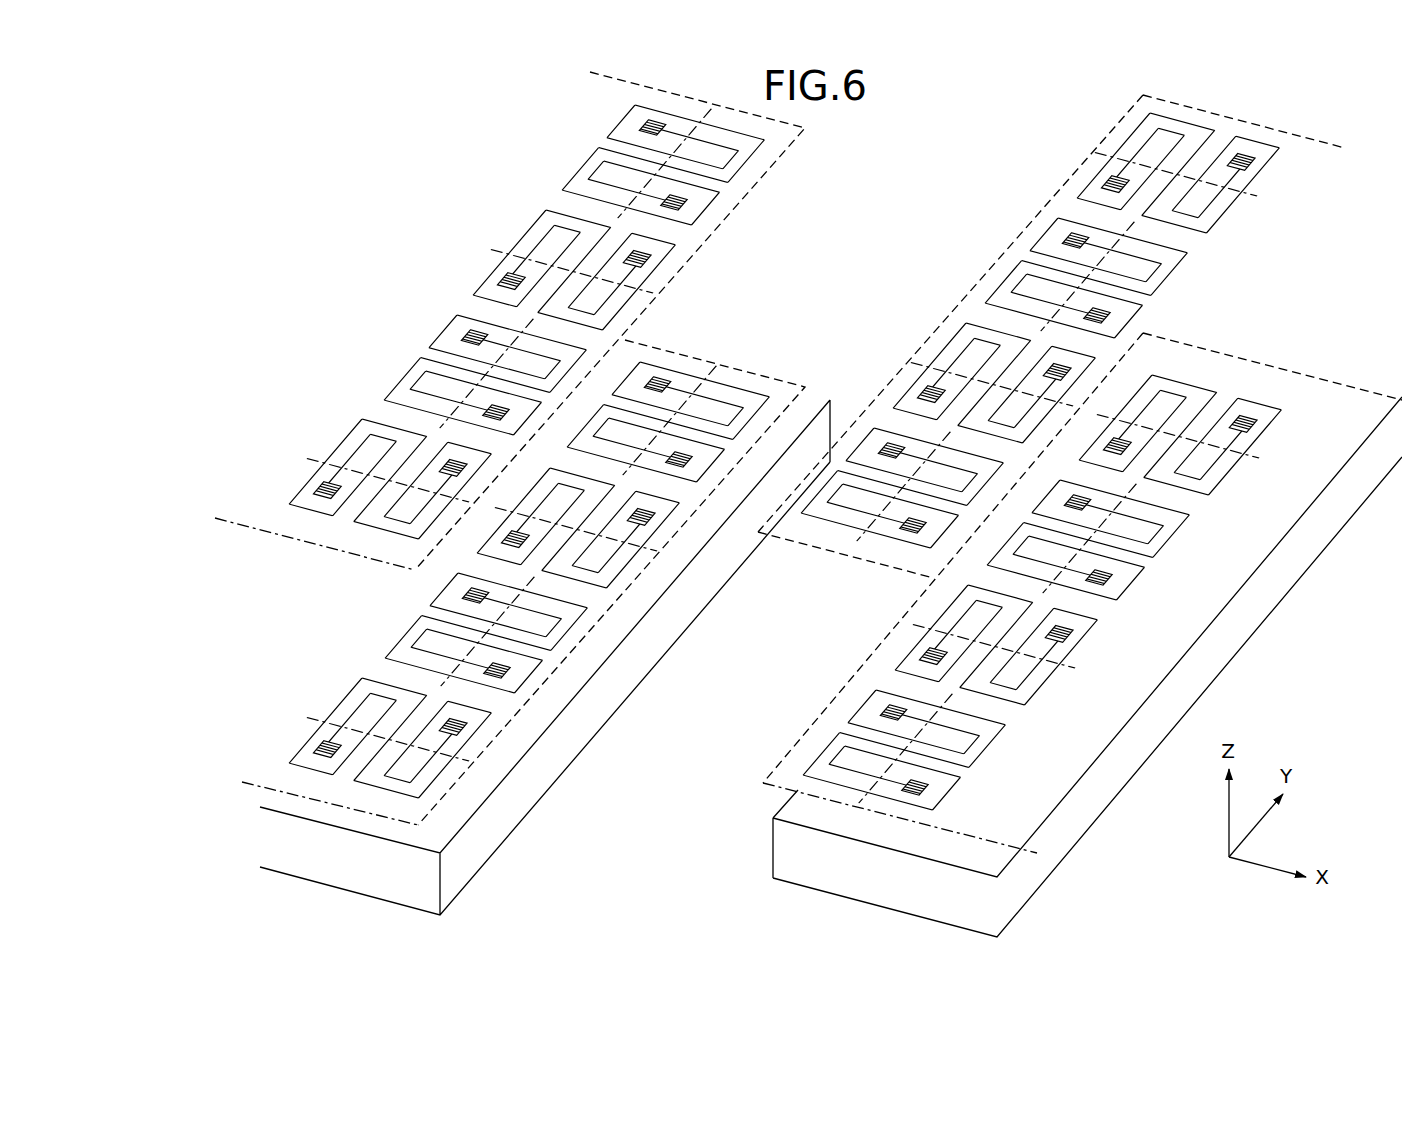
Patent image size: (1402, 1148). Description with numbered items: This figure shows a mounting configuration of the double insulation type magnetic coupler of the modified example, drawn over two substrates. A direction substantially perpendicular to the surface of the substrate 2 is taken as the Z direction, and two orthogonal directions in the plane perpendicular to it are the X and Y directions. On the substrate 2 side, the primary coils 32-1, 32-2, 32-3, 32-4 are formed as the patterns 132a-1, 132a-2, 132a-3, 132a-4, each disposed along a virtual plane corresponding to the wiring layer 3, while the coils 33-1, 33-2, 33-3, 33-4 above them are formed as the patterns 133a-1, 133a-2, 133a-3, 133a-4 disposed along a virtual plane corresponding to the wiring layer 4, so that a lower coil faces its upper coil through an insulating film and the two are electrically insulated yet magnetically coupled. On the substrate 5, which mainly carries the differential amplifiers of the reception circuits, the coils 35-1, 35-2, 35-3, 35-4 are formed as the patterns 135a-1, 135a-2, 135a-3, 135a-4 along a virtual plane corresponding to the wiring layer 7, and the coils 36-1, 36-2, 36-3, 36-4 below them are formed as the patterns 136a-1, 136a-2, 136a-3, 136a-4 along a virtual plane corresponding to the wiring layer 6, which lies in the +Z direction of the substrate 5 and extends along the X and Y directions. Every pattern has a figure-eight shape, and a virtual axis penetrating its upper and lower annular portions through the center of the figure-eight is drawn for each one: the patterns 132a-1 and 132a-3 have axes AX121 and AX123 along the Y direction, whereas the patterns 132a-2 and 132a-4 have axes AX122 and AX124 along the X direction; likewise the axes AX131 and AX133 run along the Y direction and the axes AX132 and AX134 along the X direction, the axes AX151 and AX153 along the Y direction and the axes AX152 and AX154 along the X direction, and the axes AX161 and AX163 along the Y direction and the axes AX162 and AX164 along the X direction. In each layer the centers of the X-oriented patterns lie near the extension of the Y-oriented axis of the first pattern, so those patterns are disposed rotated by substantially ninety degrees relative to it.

The substrate 2 is at (468, 868).
The wiring layer 3 is at (250, 782).
The wiring layer 4 is at (238, 524).
The substrate 5 is at (772, 845).
The wiring layer 6 is at (1042, 853).
The wiring layer 7 is at (1280, 112).
The coil 32-1 is at (685, 366).
The vibration element 32-2 is at (627, 611).
The vibration element 32-3 is at (390, 633).
The vibration element 32-4 is at (313, 723).
The coil 33-1 is at (570, 152).
The vibration element 33-2 is at (484, 248).
The vibration element 33-3 is at (360, 375).
The vibration element 33-4 is at (324, 413).
The coil 35-1 is at (1021, 256).
The vibration element 35-2 is at (1080, 172).
The vibration element 35-3 is at (890, 567).
The vibration element 35-4 is at (959, 327).
The coil 36-1 is at (1156, 547).
The coil 36-2 is at (1239, 446).
The coil 36-3 is at (971, 757).
The vibration element 36-4 is at (1056, 655).
The pattern 132a-1 is at (742, 383).
The pattern 132a-2 is at (617, 583).
The pattern 132a-3 is at (410, 590).
The pattern 132a-4 is at (330, 690).
The pattern 133a-1 is at (578, 143).
The pattern 133a-2 is at (512, 215).
The pattern 133a-3 is at (406, 334).
The pattern 133a-4 is at (325, 431).
The pattern 135a-1 is at (985, 285).
The pattern 135a-2 is at (1088, 168).
The pattern 135a-3 is at (880, 578).
The pattern 135a-4 is at (955, 325).
The pattern 136a-1 is at (1178, 548).
The pattern 136a-2 is at (1268, 440).
The pattern 136a-3 is at (990, 760).
The pattern 136a-4 is at (1082, 650).
The axis AX121 is at (704, 366).
The axis AX122 is at (645, 554).
The axis AX123 is at (432, 684).
The axis AX124 is at (306, 718).
The axis AX131 is at (703, 106).
The axis AX132 is at (495, 258).
The axis AX133 is at (430, 427).
The axis AX134 is at (306, 462).
The axis AX151 is at (1114, 222).
The axis AX152 is at (1108, 150).
The axis AX153 is at (866, 548).
The axis AX154 is at (922, 360).
The axis AX161 is at (1052, 594).
The axis AX162 is at (1260, 462).
The axis AX163 is at (866, 798).
The axis AX164 is at (1074, 668).